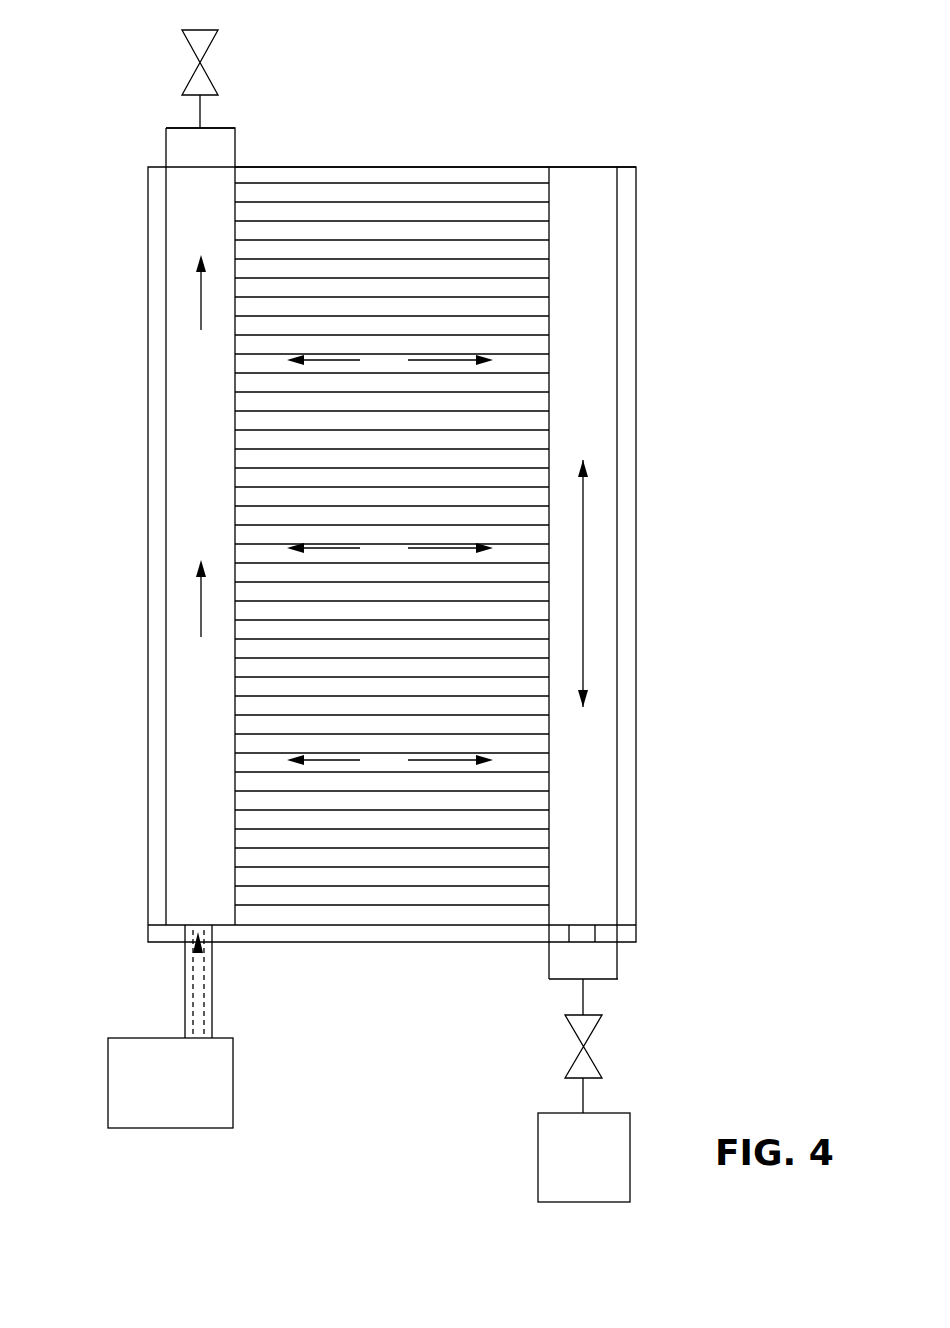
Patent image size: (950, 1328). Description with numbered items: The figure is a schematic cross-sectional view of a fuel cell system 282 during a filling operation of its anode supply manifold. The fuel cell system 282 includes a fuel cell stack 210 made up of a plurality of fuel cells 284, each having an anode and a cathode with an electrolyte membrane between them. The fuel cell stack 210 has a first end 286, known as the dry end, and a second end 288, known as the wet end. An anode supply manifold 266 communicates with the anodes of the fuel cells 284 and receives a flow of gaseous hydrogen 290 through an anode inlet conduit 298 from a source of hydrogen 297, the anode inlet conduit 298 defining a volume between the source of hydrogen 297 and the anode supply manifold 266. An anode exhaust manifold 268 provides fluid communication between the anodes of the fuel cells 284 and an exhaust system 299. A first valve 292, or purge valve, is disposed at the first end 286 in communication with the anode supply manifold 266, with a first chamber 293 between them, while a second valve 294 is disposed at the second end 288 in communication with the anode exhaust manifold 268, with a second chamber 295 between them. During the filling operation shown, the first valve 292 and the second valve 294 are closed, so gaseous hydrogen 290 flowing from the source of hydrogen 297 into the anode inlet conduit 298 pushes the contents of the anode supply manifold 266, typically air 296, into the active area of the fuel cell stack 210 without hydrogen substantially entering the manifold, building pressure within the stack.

The fuel cell stack 210 is at (503, 158).
The anode supply manifold 266 is at (170, 840).
The anode exhaust manifold 268 is at (617, 452).
The fuel cell system 282 is at (768, 163).
The fuel cells 284 is at (528, 242).
The first end 286 is at (405, 165).
The second end 288 is at (390, 943).
The gaseous hydrogen 290 is at (195, 985).
The first valve 292 is at (182, 43).
The first chamber 293 is at (166, 150).
The second valve 294 is at (600, 1060).
The second chamber 295 is at (618, 958).
The air 296 is at (200, 312).
The source of hydrogen 297 is at (108, 1073).
The anode inlet conduit 298 is at (212, 1003).
The exhaust system 299 is at (538, 1153).